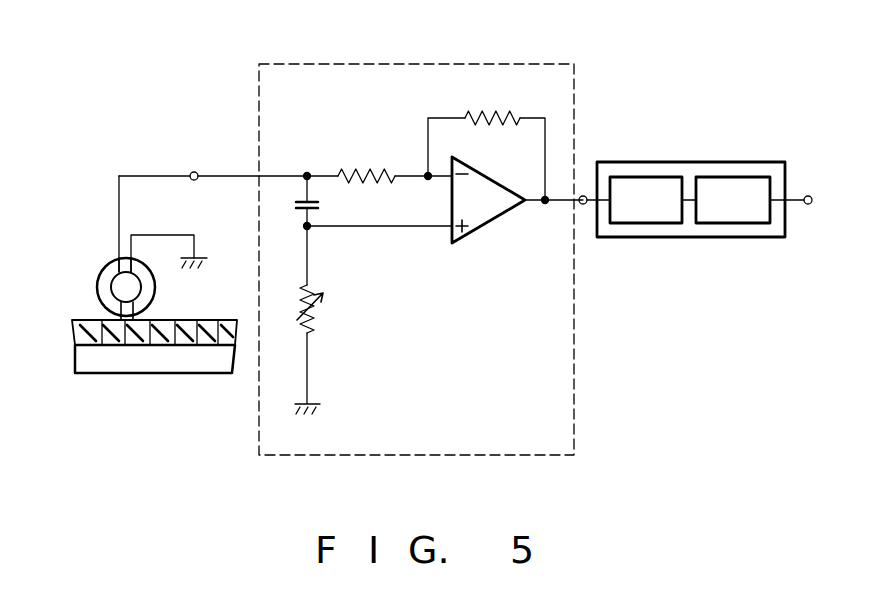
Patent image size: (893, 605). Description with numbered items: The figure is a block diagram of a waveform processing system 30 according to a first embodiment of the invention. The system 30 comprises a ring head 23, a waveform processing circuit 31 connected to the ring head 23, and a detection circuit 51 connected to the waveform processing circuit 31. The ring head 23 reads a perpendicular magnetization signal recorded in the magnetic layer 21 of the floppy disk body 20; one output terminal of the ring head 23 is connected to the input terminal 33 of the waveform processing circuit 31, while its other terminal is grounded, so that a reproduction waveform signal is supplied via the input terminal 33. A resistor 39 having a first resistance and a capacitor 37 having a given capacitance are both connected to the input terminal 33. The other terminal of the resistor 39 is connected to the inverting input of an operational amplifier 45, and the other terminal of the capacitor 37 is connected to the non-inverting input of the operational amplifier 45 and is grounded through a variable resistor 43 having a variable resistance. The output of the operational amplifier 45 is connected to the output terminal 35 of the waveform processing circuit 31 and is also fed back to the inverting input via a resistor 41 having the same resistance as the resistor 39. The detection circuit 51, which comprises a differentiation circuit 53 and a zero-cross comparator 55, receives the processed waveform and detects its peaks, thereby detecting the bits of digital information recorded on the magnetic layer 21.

The floppy disk body 20 is at (70, 367).
The magnetic layer 21 is at (72, 329).
The ring head 23 is at (98, 276).
The waveform processing system 30 is at (353, 43).
The waveform processing circuit 31 is at (498, 63).
The input terminal 33 is at (194, 172).
The output terminal 35 is at (583, 193).
The capacitor 37 is at (288, 215).
The resistor 39 is at (383, 158).
The resistor 41 is at (508, 103).
The variable resistor 43 is at (330, 297).
The operational amplifier 45 is at (482, 222).
The detection circuit 51 is at (685, 161).
The differentiation circuit 53 is at (655, 213).
The zero-cross comparator 55 is at (747, 212).